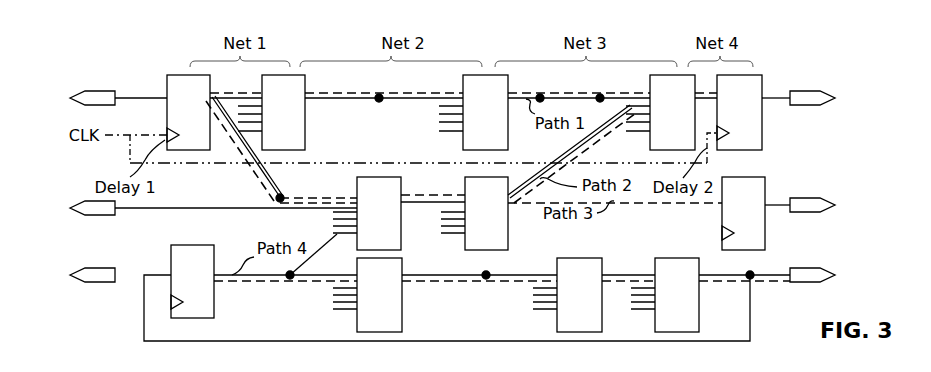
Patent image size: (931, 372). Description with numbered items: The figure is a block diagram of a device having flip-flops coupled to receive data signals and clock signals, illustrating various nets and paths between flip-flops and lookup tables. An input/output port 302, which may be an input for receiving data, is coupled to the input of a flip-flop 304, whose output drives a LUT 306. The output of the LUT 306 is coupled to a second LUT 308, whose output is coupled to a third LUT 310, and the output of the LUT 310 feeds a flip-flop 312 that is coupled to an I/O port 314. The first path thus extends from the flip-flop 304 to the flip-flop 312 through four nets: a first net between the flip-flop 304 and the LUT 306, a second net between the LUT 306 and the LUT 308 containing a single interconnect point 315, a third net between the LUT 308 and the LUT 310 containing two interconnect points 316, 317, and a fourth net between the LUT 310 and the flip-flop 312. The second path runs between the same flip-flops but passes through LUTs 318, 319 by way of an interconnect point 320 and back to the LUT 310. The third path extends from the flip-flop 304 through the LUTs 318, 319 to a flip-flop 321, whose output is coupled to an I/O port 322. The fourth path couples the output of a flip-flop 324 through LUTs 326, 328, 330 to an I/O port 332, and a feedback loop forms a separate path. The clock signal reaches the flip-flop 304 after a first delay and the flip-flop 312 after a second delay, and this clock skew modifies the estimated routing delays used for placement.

The input/output port 302 is at (106, 90).
The flip-flop 304 is at (164, 104).
The lookup table 306 is at (306, 118).
The second lookup table 308 is at (508, 116).
The third lookup table 310 is at (650, 139).
The flip-flop 312 is at (762, 80).
The input/output port 314 is at (805, 90).
The interconnect point 315 is at (381, 95).
The interconnect point 316 is at (542, 95).
The interconnect point 317 is at (602, 95).
The lookup table 318 is at (401, 190).
The lookup table 319 is at (509, 220).
The interconnect point 320 is at (283, 195).
The flip-flop 321 is at (765, 183).
The input/output port 322 is at (805, 197).
The flip-flop 324 is at (214, 252).
The lookup table 326 is at (402, 261).
The lookup table 328 is at (590, 258).
The lookup table 330 is at (676, 258).
The input/output port 332 is at (805, 267).